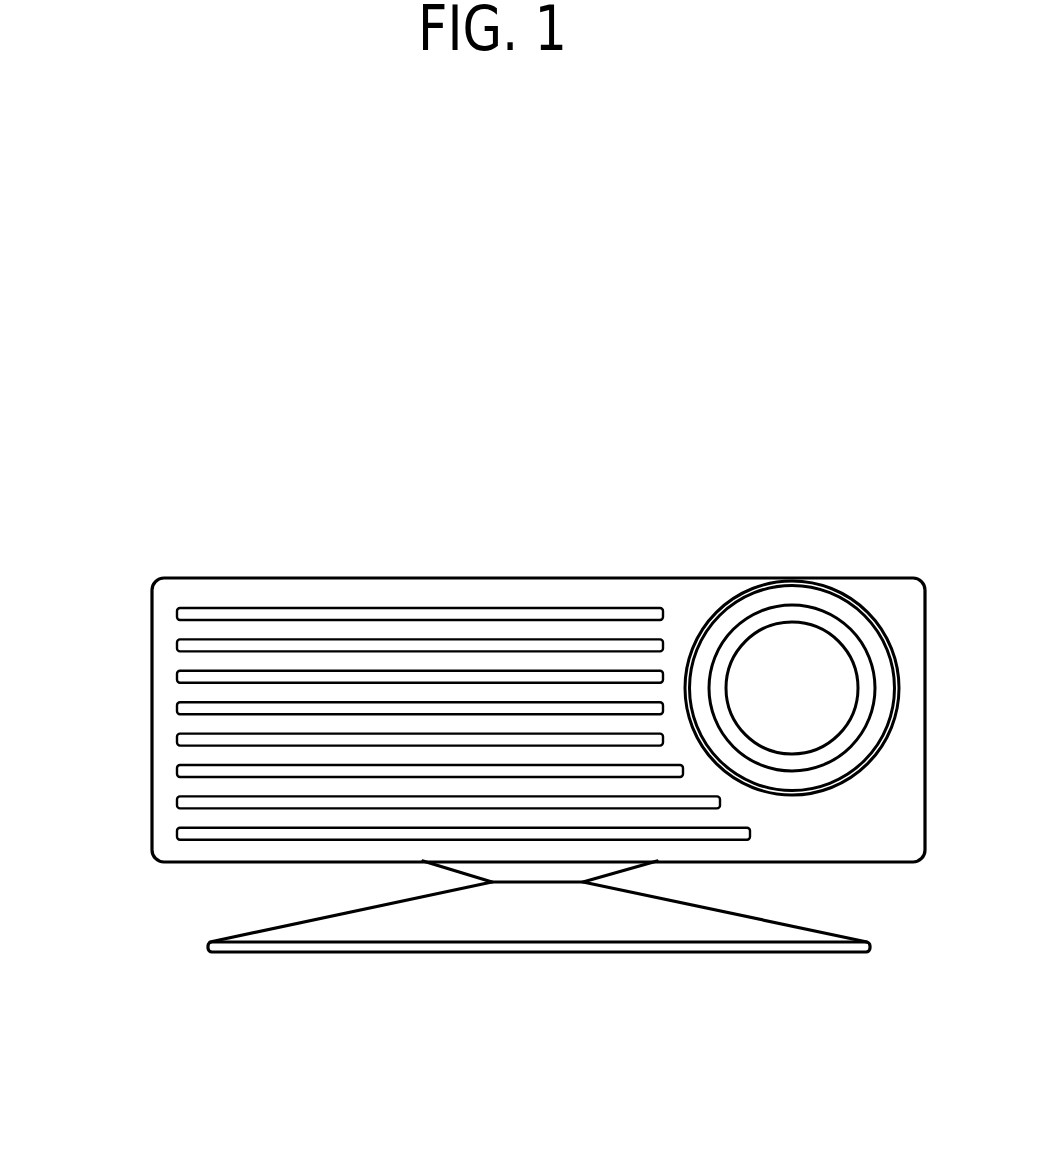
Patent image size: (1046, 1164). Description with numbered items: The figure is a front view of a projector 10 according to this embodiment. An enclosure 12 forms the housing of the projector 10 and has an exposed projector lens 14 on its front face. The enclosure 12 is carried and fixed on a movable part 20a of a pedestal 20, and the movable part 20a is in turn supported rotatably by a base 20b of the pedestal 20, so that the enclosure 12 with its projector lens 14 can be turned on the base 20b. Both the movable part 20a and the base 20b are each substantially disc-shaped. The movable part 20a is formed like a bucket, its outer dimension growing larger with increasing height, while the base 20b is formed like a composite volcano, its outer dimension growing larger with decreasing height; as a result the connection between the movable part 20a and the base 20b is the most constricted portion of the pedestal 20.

The projector 10 is at (148, 612).
The enclosure 12 is at (377, 577).
The projector lens 14 is at (820, 593).
The pedestal 20 is at (529, 980).
The movable part 20a is at (637, 868).
The base 20b is at (608, 952).